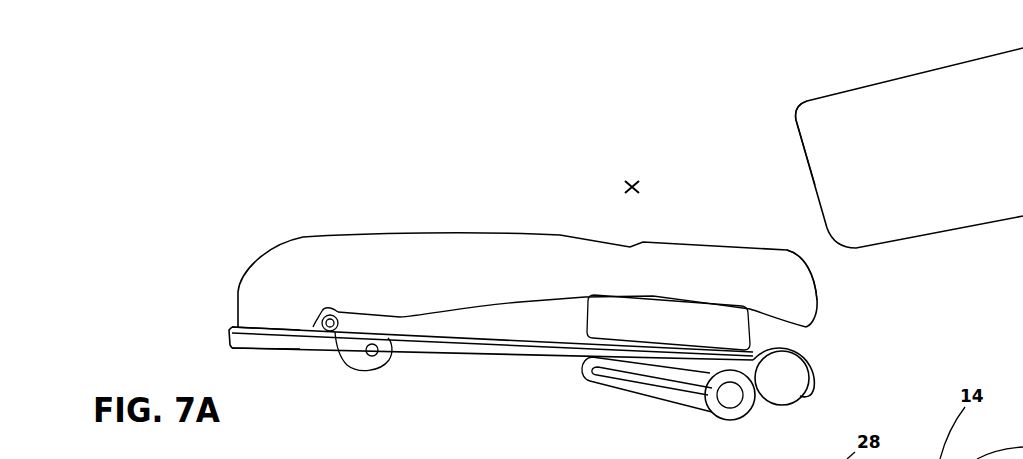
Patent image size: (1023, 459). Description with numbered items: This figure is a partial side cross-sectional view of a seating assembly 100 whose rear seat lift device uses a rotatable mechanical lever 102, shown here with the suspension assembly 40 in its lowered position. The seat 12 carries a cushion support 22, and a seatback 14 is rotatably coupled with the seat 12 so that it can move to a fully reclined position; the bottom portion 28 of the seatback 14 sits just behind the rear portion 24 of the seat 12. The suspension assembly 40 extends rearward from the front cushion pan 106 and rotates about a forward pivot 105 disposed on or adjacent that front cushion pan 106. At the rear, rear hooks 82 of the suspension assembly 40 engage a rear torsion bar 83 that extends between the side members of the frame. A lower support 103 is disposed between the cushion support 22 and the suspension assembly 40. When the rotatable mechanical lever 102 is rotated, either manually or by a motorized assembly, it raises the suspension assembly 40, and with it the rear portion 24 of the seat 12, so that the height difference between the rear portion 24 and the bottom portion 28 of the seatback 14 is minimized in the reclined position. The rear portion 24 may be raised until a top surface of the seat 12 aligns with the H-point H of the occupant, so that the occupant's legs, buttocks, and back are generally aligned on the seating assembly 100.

The seat 12 is at (458, 232).
The seatback 14 is at (938, 68).
The cushion support 22 is at (439, 286).
The rear portion 24 is at (788, 248).
The bottom portion 28 is at (820, 97).
The suspension assembly 40 is at (457, 342).
The rear hooks 82 is at (802, 355).
The rear torsion bar 83 is at (790, 397).
The seating assembly 100 is at (316, 173).
The rotatable mechanical lever 102 is at (657, 393).
The lower support 103 is at (675, 334).
The forward pivot 105 is at (333, 333).
The front cushion pan 106 is at (292, 340).
The H-point H is at (640, 184).